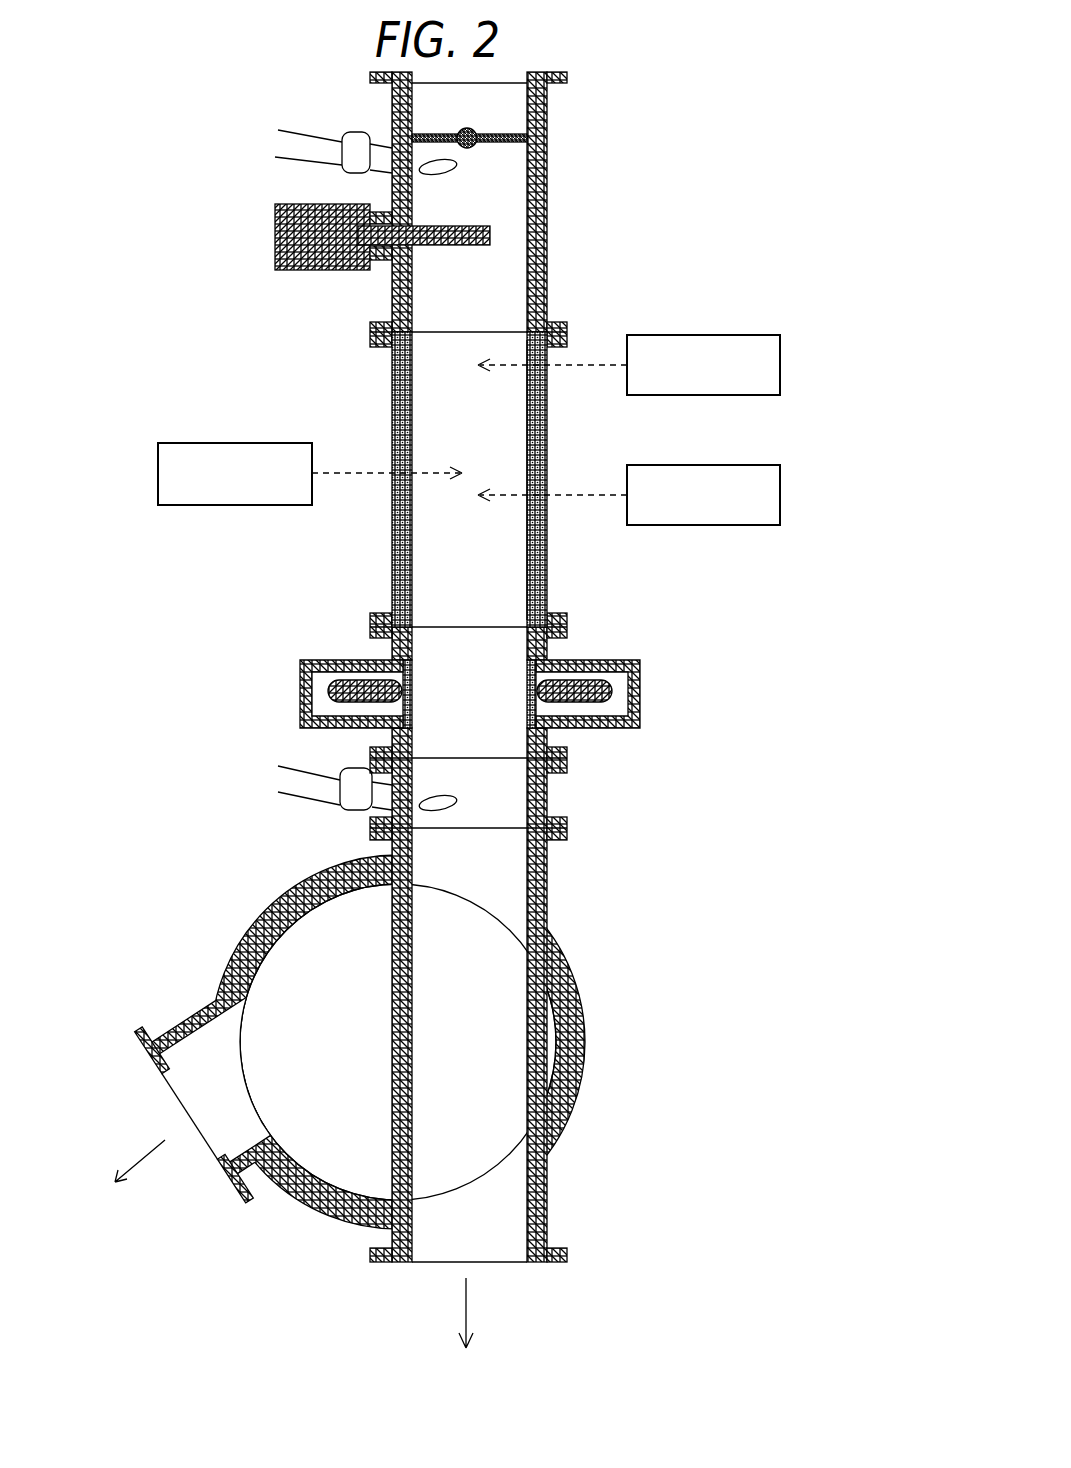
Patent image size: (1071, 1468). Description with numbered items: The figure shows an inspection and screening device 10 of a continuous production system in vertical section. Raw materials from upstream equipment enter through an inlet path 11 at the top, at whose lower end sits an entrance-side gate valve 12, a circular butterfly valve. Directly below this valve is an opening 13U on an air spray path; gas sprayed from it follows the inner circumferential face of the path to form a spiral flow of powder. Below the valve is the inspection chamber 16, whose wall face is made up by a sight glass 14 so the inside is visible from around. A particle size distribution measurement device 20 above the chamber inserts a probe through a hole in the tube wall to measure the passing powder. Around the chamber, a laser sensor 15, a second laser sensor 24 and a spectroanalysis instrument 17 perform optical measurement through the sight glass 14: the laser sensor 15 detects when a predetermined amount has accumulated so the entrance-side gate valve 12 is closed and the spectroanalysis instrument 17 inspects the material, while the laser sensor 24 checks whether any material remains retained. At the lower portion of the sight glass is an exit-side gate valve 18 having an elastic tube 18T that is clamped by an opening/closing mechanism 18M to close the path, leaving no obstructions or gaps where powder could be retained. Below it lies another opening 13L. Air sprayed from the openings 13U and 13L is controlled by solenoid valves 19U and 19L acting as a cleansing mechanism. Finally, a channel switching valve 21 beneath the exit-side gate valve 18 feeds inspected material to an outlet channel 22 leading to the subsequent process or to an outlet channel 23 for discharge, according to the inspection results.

The inspection and screening device 10 is at (776, 154).
The inlet path 11 is at (485, 103).
The entrance-side gate valve 12 is at (505, 134).
The opening 13U is at (436, 174).
The opening 13L is at (436, 808).
The sight glass 14 is at (545, 425).
The laser sensor 15 is at (758, 335).
The inspection chamber 16 is at (508, 551).
The spectroanalysis instrument 17 is at (758, 465).
The exit-side gate valve 18 is at (640, 687).
The opening/closing mechanism 18M is at (348, 684).
The elastic tube 18T is at (396, 650).
The solenoid valve 19U is at (352, 132).
The solenoid valve 19L is at (352, 768).
The particle size distribution measurement device 20 is at (300, 270).
The channel switching valve 21 is at (241, 1048).
The outlet channel 22 is at (484, 1228).
The outlet channel 23 is at (169, 1085).
The laser sensor 24 is at (180, 443).